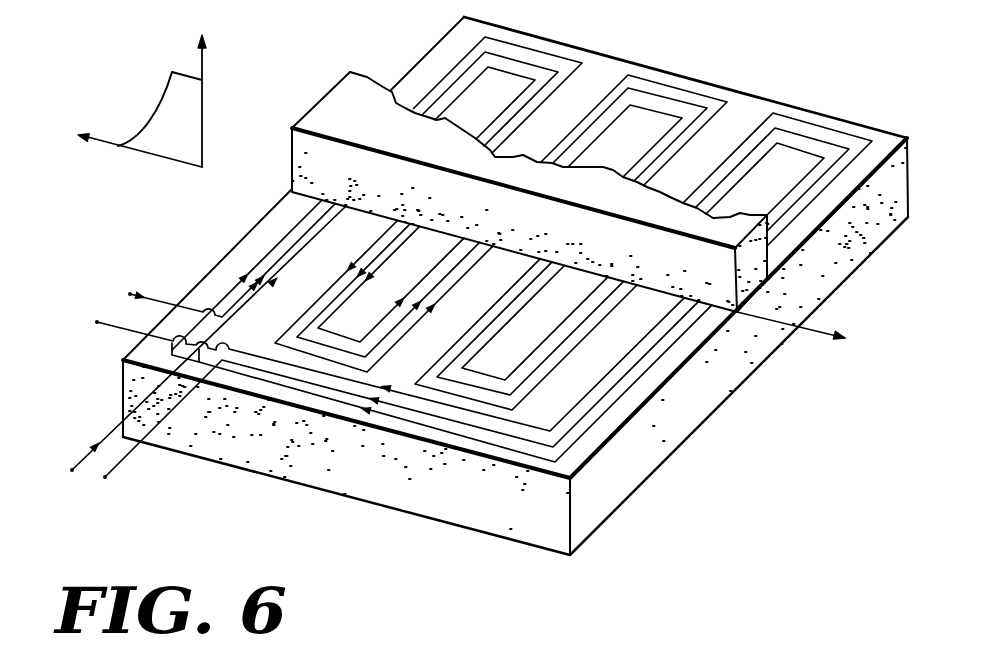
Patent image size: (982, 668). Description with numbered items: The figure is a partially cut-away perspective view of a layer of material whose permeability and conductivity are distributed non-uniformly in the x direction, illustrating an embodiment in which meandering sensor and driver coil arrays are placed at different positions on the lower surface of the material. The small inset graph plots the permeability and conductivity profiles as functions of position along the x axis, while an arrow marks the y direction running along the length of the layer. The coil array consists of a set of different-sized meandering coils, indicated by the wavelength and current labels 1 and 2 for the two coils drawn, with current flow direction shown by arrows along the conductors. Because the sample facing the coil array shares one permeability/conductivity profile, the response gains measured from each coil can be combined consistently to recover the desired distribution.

The first coil conductor carrying current i1 (wavelength lambda1) 1 is at (371, 317).
The second coil conductor carrying current i2 (wavelength lambda2) 2 is at (373, 367).
The x direction x is at (151, 123).
The y-axis direction arrow y is at (802, 334).